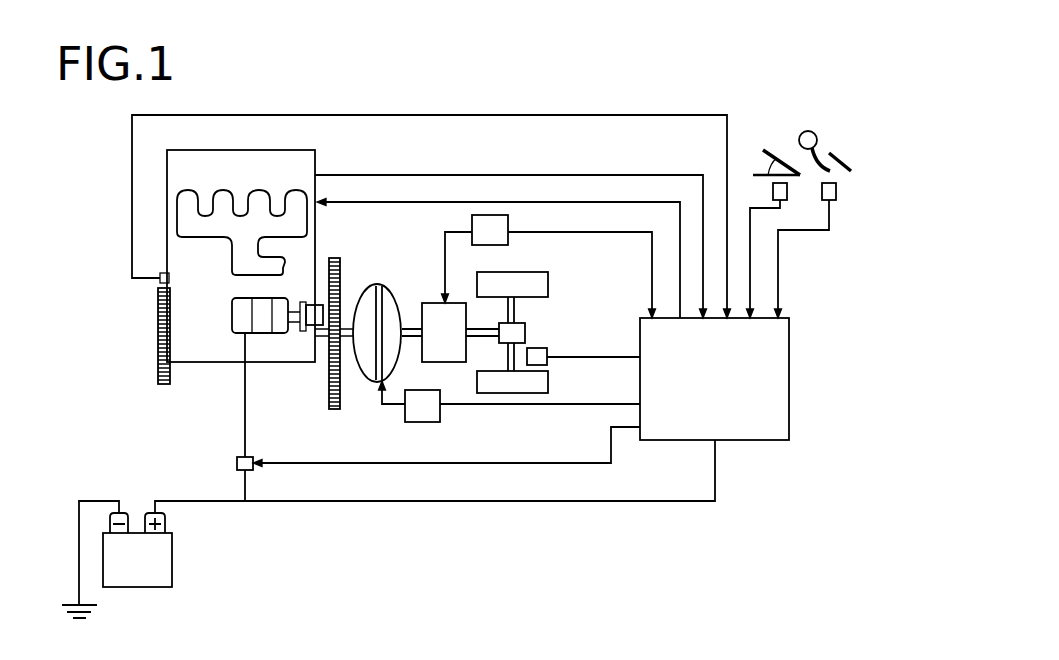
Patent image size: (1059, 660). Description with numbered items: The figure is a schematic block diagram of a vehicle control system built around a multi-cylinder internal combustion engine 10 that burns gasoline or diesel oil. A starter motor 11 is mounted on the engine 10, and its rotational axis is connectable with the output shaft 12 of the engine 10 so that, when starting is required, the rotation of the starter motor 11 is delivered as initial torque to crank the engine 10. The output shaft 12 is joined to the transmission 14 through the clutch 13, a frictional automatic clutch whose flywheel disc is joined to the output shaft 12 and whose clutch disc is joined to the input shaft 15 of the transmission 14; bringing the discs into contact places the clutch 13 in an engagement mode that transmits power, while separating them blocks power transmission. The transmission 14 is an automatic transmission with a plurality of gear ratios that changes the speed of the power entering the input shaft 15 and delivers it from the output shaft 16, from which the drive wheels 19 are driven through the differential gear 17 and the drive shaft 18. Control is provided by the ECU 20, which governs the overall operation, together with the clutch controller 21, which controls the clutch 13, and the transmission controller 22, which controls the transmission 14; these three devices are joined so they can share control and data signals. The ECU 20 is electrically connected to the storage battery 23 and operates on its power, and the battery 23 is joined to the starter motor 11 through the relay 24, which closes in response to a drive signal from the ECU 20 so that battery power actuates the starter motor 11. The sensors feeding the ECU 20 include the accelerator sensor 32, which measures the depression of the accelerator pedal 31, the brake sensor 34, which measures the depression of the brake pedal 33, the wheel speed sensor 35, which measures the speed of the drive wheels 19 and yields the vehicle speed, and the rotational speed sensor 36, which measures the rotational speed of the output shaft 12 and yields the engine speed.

The engine 10 is at (315, 152).
The starter motor 11 is at (232, 312).
The output shaft 12 is at (323, 340).
The clutch 13 is at (377, 281).
The transmission 14 is at (431, 299).
The input shaft 15 is at (413, 345).
The output shaft 16 is at (484, 329).
The differential gear 17 is at (525, 332).
The drive shaft 18 is at (515, 312).
The drive wheels 19 is at (548, 282).
The ECU 20 is at (789, 341).
The clutch controller 21 is at (420, 422).
The transmission controller 22 is at (508, 222).
The storage battery 23 is at (172, 556).
The relay 24 is at (237, 463).
The accelerator pedal 31 is at (771, 152).
The accelerator sensor 32 is at (787, 189).
The brake pedal 33 is at (839, 152).
The brake sensor 34 is at (836, 190).
The wheel speed sensor 35 is at (545, 365).
The rotational speed sensor 36 is at (162, 272).